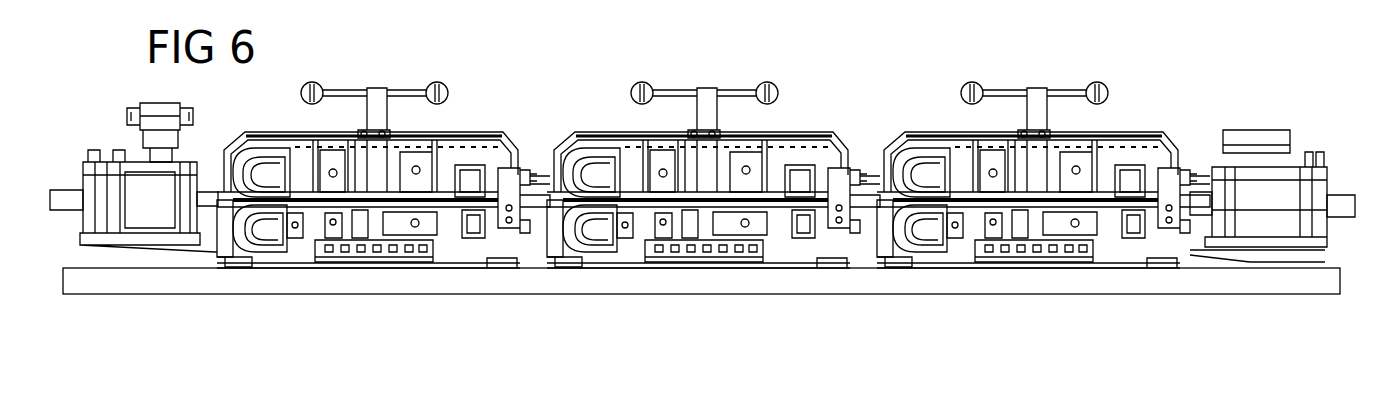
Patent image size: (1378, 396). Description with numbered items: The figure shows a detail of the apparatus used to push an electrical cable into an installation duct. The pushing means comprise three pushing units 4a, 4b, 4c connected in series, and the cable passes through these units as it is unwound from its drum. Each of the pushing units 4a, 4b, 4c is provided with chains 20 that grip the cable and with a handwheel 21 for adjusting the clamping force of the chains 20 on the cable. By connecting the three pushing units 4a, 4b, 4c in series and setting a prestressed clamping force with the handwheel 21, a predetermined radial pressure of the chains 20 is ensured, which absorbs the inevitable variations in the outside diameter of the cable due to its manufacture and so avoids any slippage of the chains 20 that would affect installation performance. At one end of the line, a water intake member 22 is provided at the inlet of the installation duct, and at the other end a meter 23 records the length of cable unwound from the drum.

The pushing unit 4a is at (490, 106).
The pushing unit 4b is at (816, 107).
The pushing unit 4c is at (1148, 112).
The chains 20 is at (506, 133).
The handwheel 21 is at (366, 88).
The water intake member 22 is at (162, 103).
The meter 23 is at (1296, 103).